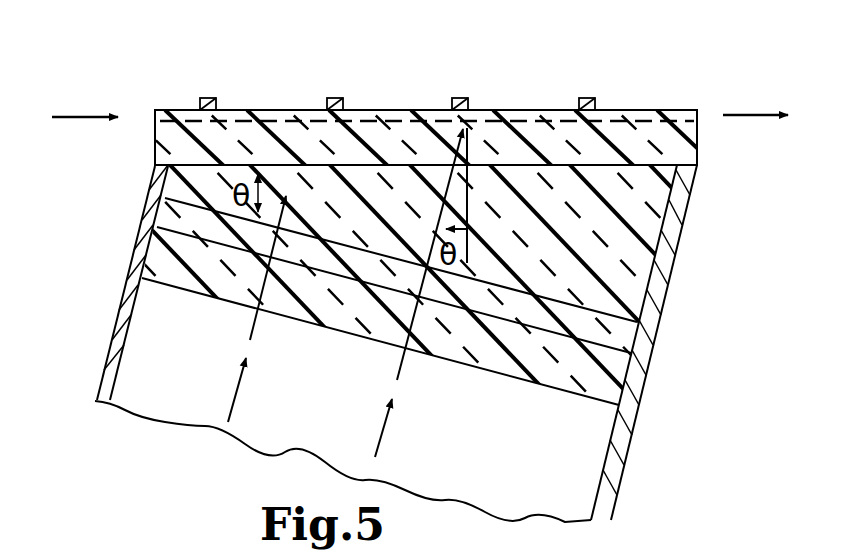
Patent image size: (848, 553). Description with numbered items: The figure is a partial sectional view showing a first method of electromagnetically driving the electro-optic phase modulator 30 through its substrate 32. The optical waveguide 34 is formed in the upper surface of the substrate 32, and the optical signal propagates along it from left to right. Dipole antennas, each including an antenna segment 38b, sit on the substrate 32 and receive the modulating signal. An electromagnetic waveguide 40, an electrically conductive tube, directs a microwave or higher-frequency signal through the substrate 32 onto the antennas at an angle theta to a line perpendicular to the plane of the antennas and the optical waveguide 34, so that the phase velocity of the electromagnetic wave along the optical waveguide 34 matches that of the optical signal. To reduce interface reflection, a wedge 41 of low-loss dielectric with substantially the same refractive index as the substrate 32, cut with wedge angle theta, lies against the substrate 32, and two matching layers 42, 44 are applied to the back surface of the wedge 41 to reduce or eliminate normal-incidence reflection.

The electro-optic phase modulator 30 is at (112, 90).
The substrate 32 is at (168, 138).
The optical waveguide 34 is at (507, 110).
The antenna segment 38b is at (206, 98).
The electromagnetic waveguide 40 is at (125, 284).
The wedge 41 is at (620, 238).
The matching layer 42 is at (612, 391).
The matching layer 44 is at (640, 328).